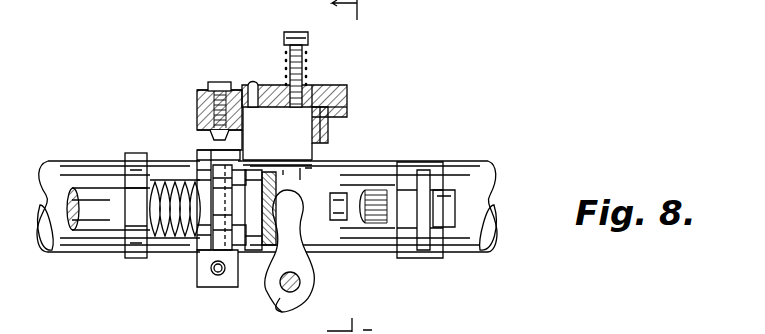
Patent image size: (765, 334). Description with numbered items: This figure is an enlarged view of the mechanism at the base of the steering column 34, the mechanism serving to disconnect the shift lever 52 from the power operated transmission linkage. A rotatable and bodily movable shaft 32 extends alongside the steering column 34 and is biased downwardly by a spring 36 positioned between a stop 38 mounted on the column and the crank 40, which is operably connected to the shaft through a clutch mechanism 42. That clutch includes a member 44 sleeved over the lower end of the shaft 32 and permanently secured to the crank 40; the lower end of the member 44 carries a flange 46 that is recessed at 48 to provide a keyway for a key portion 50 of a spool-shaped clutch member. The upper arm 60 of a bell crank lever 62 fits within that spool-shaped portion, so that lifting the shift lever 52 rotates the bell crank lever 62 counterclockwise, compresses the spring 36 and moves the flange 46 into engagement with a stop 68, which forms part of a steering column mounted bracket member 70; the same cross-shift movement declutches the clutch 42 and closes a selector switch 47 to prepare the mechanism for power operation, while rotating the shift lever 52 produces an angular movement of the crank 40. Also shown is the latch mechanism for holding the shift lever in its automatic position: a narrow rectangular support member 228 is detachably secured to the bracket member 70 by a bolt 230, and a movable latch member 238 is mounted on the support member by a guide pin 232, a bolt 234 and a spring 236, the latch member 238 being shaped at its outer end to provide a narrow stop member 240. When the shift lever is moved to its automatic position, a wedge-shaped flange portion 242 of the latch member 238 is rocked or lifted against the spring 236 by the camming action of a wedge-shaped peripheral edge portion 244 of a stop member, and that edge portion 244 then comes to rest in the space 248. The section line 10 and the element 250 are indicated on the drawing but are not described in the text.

The section line 10 is at (354, 167).
The shaft 32 is at (85, 192).
The steering column 34 is at (480, 163).
The spring 36 is at (170, 238).
The stop 38 is at (133, 158).
The crank 40 is at (200, 165).
The clutch mechanism 42 is at (238, 308).
The member 44 is at (208, 258).
The flange 46 is at (246, 165).
The selector switch 47 is at (397, 158).
The recess 48 is at (271, 172).
The key portion 50 is at (280, 178).
The shift lever 52 is at (262, 220).
The upper arm 60 is at (315, 265).
The bell crank lever 62 is at (352, 304).
The stop 68 is at (240, 146).
The bracket member 70 is at (199, 115).
The support member 228 is at (199, 97).
The bolt 230 is at (212, 84).
The guide pin 232 is at (252, 82).
The bolt 234 is at (285, 60).
The spring 236 is at (286, 36).
The latch member 238 is at (305, 88).
The stop member 240 is at (348, 96).
The wedge-shaped flange portion 242 is at (322, 90).
The wedge-shaped peripheral edge portion 244 is at (312, 120).
The space 248 is at (347, 112).
The leg 250 is at (330, 137).